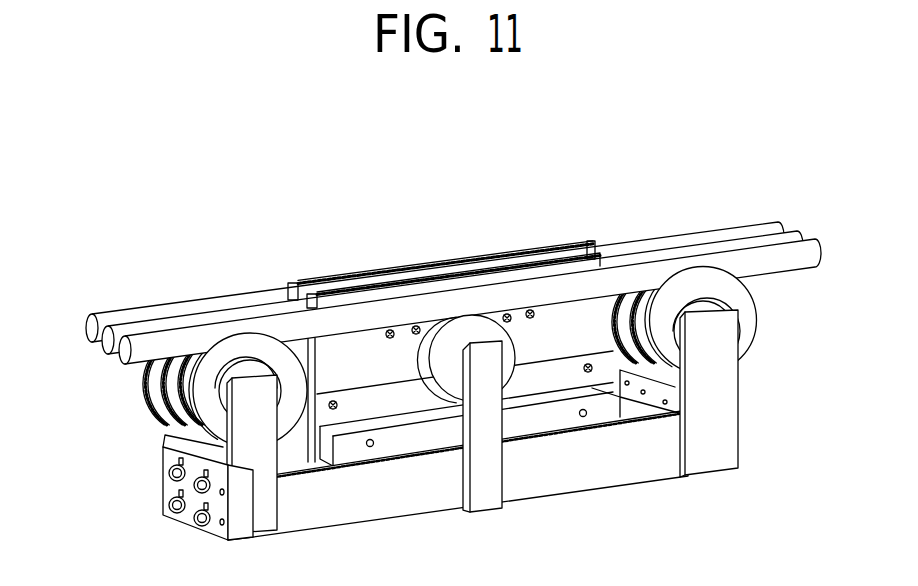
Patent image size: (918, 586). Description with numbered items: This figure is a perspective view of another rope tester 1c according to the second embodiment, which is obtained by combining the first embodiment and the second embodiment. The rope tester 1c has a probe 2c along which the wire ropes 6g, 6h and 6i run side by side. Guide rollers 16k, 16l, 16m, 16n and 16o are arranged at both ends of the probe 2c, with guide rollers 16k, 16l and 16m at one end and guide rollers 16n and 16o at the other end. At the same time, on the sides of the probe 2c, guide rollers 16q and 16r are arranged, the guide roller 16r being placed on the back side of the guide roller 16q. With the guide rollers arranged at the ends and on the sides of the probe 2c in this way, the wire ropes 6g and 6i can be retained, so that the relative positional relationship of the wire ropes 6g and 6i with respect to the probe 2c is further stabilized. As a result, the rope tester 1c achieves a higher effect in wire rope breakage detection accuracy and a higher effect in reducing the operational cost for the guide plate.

The rope tester 1c is at (184, 187).
The probe 2c is at (457, 229).
The wire rope 6g is at (402, 282).
The wire rope 6h is at (449, 289).
The wire rope 6i is at (470, 294).
The guide roller 16k is at (111, 384).
The guide roller 16l is at (104, 399).
The guide roller 16m is at (388, 427).
The guide roller 16n is at (651, 260).
The guide roller 16o is at (782, 384).
The guide roller 16q is at (448, 277).
The guide roller 16r is at (441, 211).